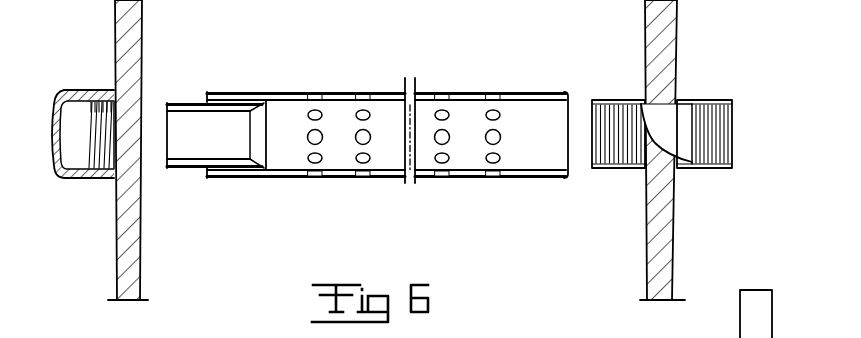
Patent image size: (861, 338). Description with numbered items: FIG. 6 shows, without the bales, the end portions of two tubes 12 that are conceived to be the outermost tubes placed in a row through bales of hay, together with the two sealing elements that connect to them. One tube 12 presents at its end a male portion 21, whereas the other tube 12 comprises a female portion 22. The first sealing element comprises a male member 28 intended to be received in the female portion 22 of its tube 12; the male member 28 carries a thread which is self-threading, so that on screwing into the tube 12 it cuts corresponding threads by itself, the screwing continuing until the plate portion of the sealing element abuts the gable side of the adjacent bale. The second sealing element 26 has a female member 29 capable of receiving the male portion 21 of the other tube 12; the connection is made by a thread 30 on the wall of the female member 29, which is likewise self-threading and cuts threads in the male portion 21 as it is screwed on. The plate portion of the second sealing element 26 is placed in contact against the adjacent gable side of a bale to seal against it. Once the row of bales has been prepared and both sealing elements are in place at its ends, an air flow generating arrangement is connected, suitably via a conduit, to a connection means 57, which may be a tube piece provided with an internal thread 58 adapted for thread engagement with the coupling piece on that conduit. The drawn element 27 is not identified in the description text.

The tube 12 is at (387, 131).
The male portion 21 is at (176, 101).
The female portion 22 is at (547, 145).
The second sealing element 26 is at (125, 35).
The threaded rod end 27 is at (676, 137).
The male member 28 is at (607, 100).
The female member 29 is at (76, 150).
The thread 30 is at (123, 150).
The connection means 57 is at (706, 141).
The internal thread 58 is at (717, 166).